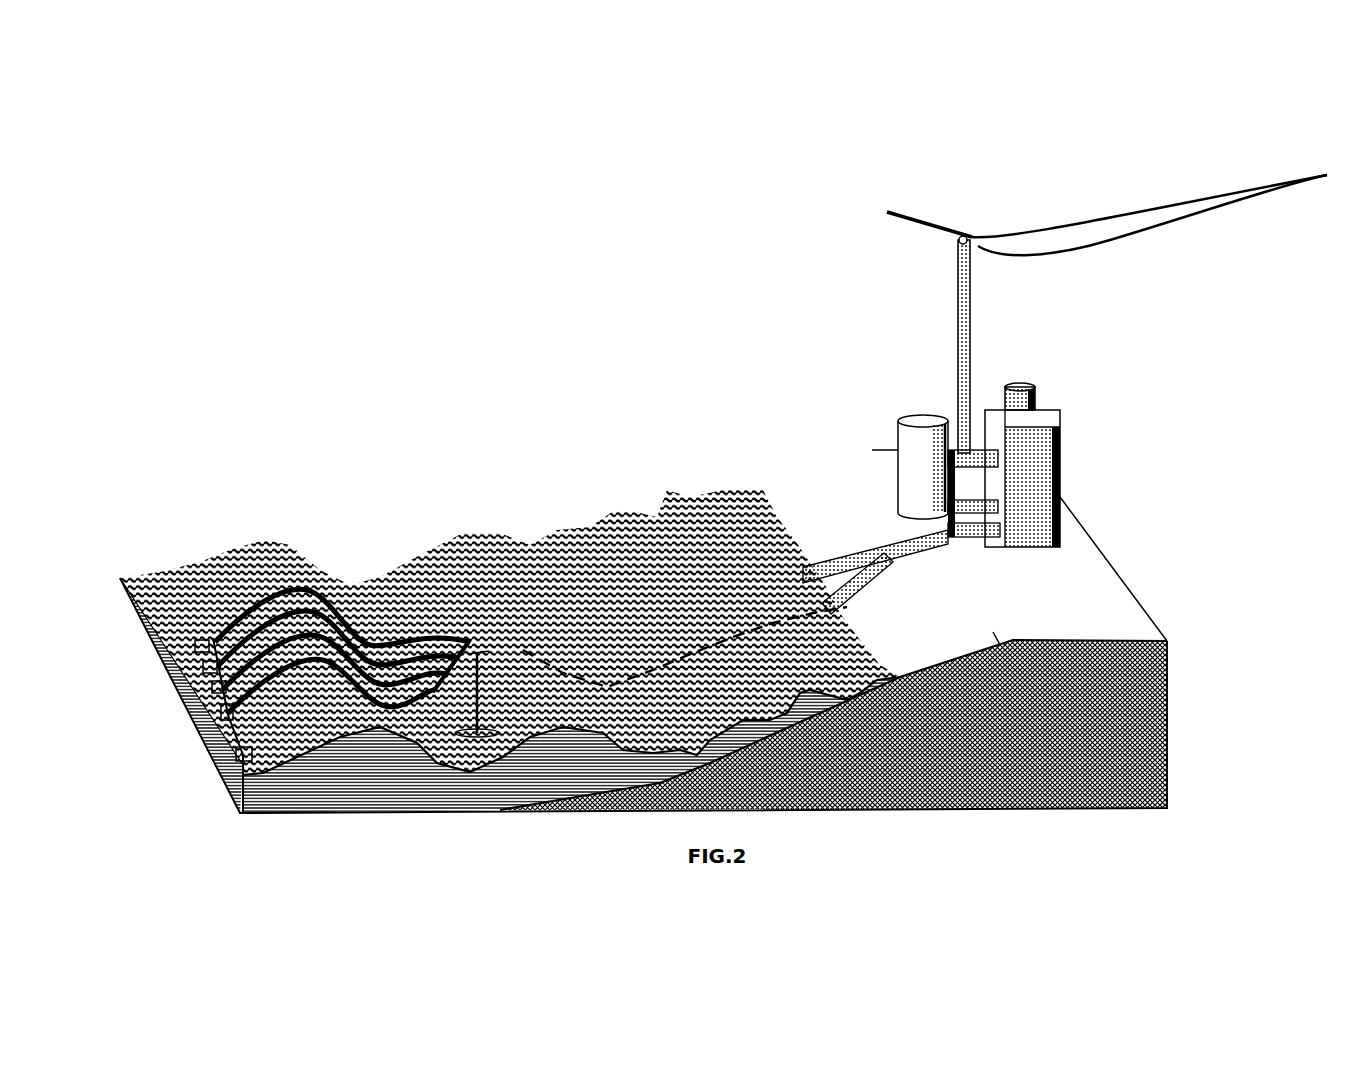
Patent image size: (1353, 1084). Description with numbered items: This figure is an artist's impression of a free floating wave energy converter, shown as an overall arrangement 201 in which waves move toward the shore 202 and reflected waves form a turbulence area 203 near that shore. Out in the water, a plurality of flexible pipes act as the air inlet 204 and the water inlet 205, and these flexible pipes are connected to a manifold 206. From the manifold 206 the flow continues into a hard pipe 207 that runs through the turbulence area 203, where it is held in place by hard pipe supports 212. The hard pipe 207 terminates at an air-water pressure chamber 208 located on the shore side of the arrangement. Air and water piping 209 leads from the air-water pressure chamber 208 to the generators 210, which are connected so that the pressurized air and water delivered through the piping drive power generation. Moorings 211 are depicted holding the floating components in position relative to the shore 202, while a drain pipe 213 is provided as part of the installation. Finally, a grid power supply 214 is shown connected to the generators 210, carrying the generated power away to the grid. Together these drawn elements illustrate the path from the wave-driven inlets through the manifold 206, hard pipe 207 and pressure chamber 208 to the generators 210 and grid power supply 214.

The arrangement 201 is at (403, 330).
The shore 202 is at (851, 477).
The turbulence area 203 is at (607, 523).
The flexible pipe air inlet 204 is at (307, 590).
The flexible pipe water inlet 205 is at (208, 628).
The manifold 206 is at (464, 640).
The hard pipe 207 is at (713, 630).
The air-water pressure chamber 208 is at (878, 418).
The air and water piping 209 is at (943, 443).
The generators 210 is at (1068, 498).
The moorings 211 is at (197, 627).
The hard pipe supports 212 is at (493, 702).
The drain pipe 213 is at (848, 553).
The grid power supply 214 is at (979, 298).